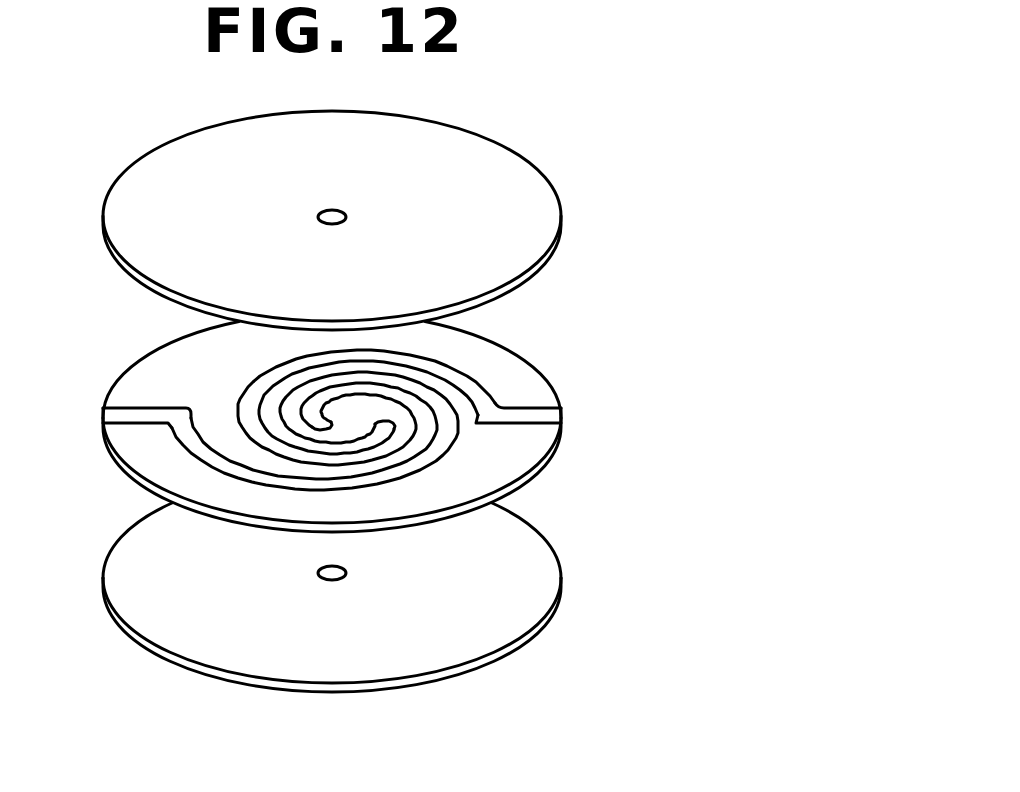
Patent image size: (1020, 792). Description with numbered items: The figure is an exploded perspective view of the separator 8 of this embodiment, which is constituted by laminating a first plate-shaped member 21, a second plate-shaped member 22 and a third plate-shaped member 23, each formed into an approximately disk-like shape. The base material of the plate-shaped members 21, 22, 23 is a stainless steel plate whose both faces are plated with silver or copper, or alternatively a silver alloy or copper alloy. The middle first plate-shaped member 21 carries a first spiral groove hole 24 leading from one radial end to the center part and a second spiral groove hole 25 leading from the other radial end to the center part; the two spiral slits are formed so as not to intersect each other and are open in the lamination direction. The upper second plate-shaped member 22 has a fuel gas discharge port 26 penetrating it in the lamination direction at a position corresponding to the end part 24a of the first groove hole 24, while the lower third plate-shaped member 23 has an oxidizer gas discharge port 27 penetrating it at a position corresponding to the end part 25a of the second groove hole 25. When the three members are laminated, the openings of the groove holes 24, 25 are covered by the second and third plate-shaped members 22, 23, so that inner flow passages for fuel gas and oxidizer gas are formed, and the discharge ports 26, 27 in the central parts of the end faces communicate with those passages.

The separator 8 is at (706, 249).
The first plate-shaped member 21 is at (378, 413).
The second plate-shaped member 22 is at (405, 220).
The third plate-shaped member 23 is at (405, 567).
The first spiral groove hole 24 is at (320, 379).
The end part of the first groove hole 24a is at (326, 418).
The second spiral groove hole 25 is at (290, 446).
The end part of the second groove hole 25a is at (366, 420).
The fuel gas discharge port 26 is at (335, 211).
The oxidizer gas discharge port 27 is at (318, 568).